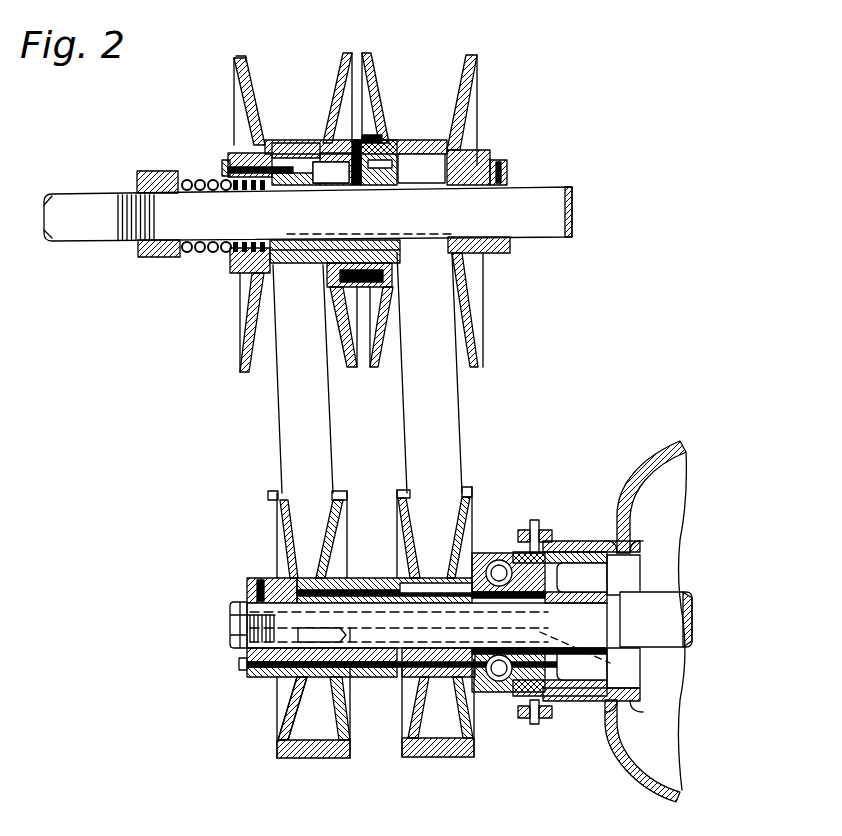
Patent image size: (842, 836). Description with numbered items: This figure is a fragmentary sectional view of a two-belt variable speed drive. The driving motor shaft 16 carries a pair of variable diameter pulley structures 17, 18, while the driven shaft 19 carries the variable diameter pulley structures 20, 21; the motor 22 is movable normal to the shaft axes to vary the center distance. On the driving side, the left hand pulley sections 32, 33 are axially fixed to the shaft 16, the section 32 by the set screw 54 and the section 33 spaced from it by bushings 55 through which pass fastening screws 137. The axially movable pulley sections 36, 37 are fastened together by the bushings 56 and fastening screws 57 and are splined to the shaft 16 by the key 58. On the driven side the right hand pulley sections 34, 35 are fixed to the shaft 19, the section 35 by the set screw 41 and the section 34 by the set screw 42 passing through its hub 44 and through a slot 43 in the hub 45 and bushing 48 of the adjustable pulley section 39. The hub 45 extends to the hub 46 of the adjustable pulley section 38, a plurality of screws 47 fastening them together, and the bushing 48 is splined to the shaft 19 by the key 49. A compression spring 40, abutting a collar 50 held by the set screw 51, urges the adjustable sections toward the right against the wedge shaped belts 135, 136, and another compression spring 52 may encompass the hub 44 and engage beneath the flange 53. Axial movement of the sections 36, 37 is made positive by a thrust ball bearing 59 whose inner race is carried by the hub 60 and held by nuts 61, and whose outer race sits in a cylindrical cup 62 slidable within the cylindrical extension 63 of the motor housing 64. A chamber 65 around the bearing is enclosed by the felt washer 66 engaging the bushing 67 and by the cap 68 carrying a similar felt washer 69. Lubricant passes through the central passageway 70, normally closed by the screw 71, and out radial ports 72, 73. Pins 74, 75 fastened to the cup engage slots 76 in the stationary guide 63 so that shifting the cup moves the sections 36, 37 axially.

The driving motor shaft 16 is at (672, 597).
The variable diameter pulley structure 17 is at (300, 722).
The variable diameter pulley structure 18 is at (444, 766).
The driven shaft 19 is at (548, 190).
The variable diameter pulley structure 20 is at (264, 57).
The variable diameter pulley structure 21 is at (475, 58).
The motor 22 is at (645, 785).
The left hand pulley section 32 is at (285, 707).
The left hand pulley section 33 is at (417, 705).
The right hand pulley section 34 is at (348, 368).
The right hand pulley section 35 is at (472, 365).
The axially movable pulley section 36 is at (338, 522).
The axially movable pulley section 37 is at (468, 497).
The adjustable pulley section 38 is at (240, 110).
The adjustable pulley section 39 is at (372, 80).
The compression spring 40 is at (197, 252).
The set screw 41 is at (497, 162).
The set screw 42 is at (357, 186).
The slot 43 is at (318, 165).
The hub 44 is at (380, 160).
The hub 45 is at (297, 265).
The hub 46 is at (233, 275).
The screws 47 is at (228, 160).
The bushing 48 is at (400, 245).
The key 49 is at (390, 233).
The collar 50 is at (140, 257).
The set screw 51 is at (146, 172).
The compression spring 52 is at (345, 283).
The flange 53 is at (374, 130).
The set screw 54 is at (256, 578).
The bushings 55 is at (380, 668).
The bushings 56 is at (376, 578).
The fastening screws 57 is at (430, 578).
The key 58 is at (593, 597).
The thrust ball bearing 59 is at (504, 690).
The hub 60 is at (482, 690).
The nuts 61 is at (530, 520).
The cylindrical cup 62 is at (560, 555).
The cylindrical extension 63 is at (590, 702).
The motor housing 64 is at (655, 455).
The chamber 65 is at (535, 720).
The felt washer 66 is at (560, 666).
The bushing 67 is at (582, 577).
The cap 68 is at (473, 568).
The felt washer 69 is at (490, 560).
The central passageway 70 is at (233, 646).
The screw 71 is at (235, 602).
The radial port 72 is at (300, 660).
The radial port 73 is at (590, 660).
The pin 74 is at (545, 722).
The pin 75 is at (544, 523).
The slots 76 is at (578, 545).
The wedge shaped belt 135 is at (276, 450).
The wedge shaped belt 136 is at (460, 428).
The fastening screws 137 is at (238, 668).